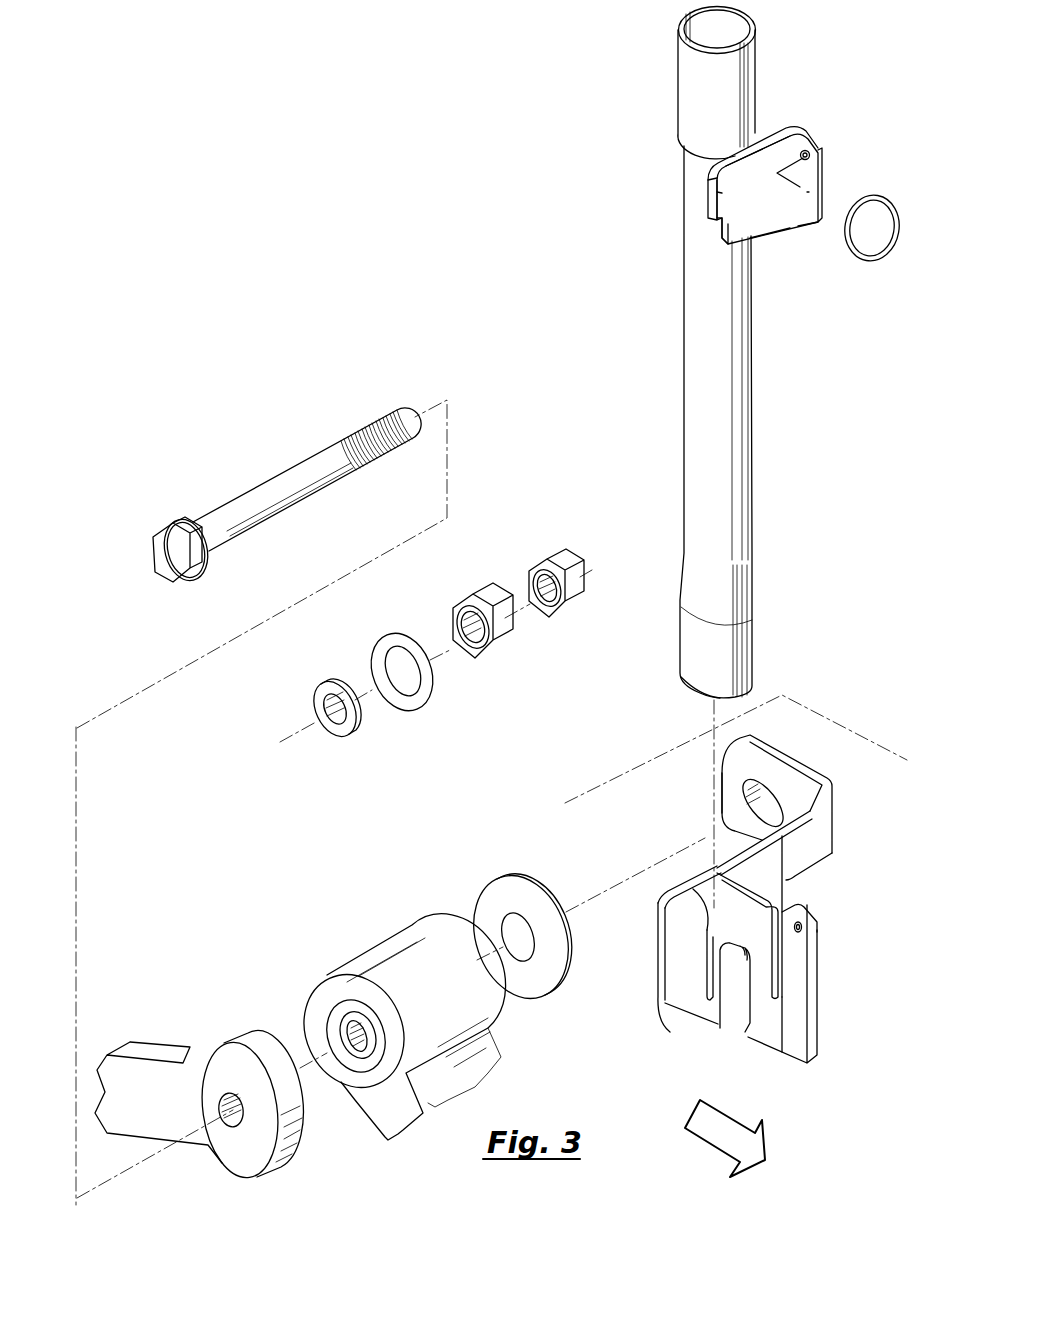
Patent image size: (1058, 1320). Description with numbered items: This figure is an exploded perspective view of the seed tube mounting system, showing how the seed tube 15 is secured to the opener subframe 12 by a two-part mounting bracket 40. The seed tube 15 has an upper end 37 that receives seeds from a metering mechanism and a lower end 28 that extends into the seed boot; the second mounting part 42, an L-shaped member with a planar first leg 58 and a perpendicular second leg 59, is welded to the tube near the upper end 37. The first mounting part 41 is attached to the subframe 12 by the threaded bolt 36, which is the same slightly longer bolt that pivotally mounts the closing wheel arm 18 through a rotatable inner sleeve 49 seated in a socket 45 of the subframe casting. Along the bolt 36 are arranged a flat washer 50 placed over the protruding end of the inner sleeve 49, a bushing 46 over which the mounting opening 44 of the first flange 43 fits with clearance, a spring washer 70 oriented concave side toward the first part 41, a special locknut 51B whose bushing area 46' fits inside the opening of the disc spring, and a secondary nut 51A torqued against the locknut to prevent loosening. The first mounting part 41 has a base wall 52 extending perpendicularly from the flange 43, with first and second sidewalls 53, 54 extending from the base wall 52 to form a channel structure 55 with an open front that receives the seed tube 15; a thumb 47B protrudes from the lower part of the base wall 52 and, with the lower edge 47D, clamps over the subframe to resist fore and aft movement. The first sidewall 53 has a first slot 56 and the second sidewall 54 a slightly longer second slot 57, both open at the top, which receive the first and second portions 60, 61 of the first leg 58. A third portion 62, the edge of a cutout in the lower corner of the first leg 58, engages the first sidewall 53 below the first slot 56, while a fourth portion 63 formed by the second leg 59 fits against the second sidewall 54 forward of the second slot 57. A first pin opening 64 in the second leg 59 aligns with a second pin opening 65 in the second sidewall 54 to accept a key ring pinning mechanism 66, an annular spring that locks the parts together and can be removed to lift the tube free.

The opener subframe 12 is at (387, 960).
The seed tube 15 is at (706, 372).
The closing wheel arm 18 is at (163, 1052).
The lower end 28 is at (752, 688).
The threaded bolt 36 is at (296, 485).
The upper end 37 is at (703, 77).
The mounting bracket 40 is at (814, 100).
The first mounting part 41 is at (849, 815).
The second mounting part 42 is at (797, 138).
The first flange 43 is at (767, 756).
The mounting opening 44 is at (750, 798).
The socket 45 is at (353, 1063).
The bushing 46 is at (307, 703).
The bushing area 46' is at (429, 617).
The thumb 47B is at (817, 924).
The lower edge 47D is at (813, 862).
The inner sleeve 49 is at (343, 1018).
The flat washer 50 is at (522, 882).
The secondary nut 51A is at (543, 558).
The special locknut 51B is at (474, 596).
The base wall 52 is at (773, 867).
The first sidewall 53 is at (697, 1003).
The second sidewall 54 is at (787, 1027).
The channel structure 55 is at (737, 903).
The first slot 56 is at (712, 984).
The second slot 57 is at (773, 970).
The first leg 58 is at (712, 178).
The second leg 59 is at (818, 177).
The first portion 60 is at (718, 193).
The second portion 61 is at (767, 215).
The third portion 62 is at (722, 230).
The fourth portion 63 is at (798, 212).
The first pin opening 64 is at (810, 157).
The second pin opening 65 is at (802, 929).
The key ring pinning mechanism 66 is at (873, 261).
The spring washer 70 is at (422, 702).